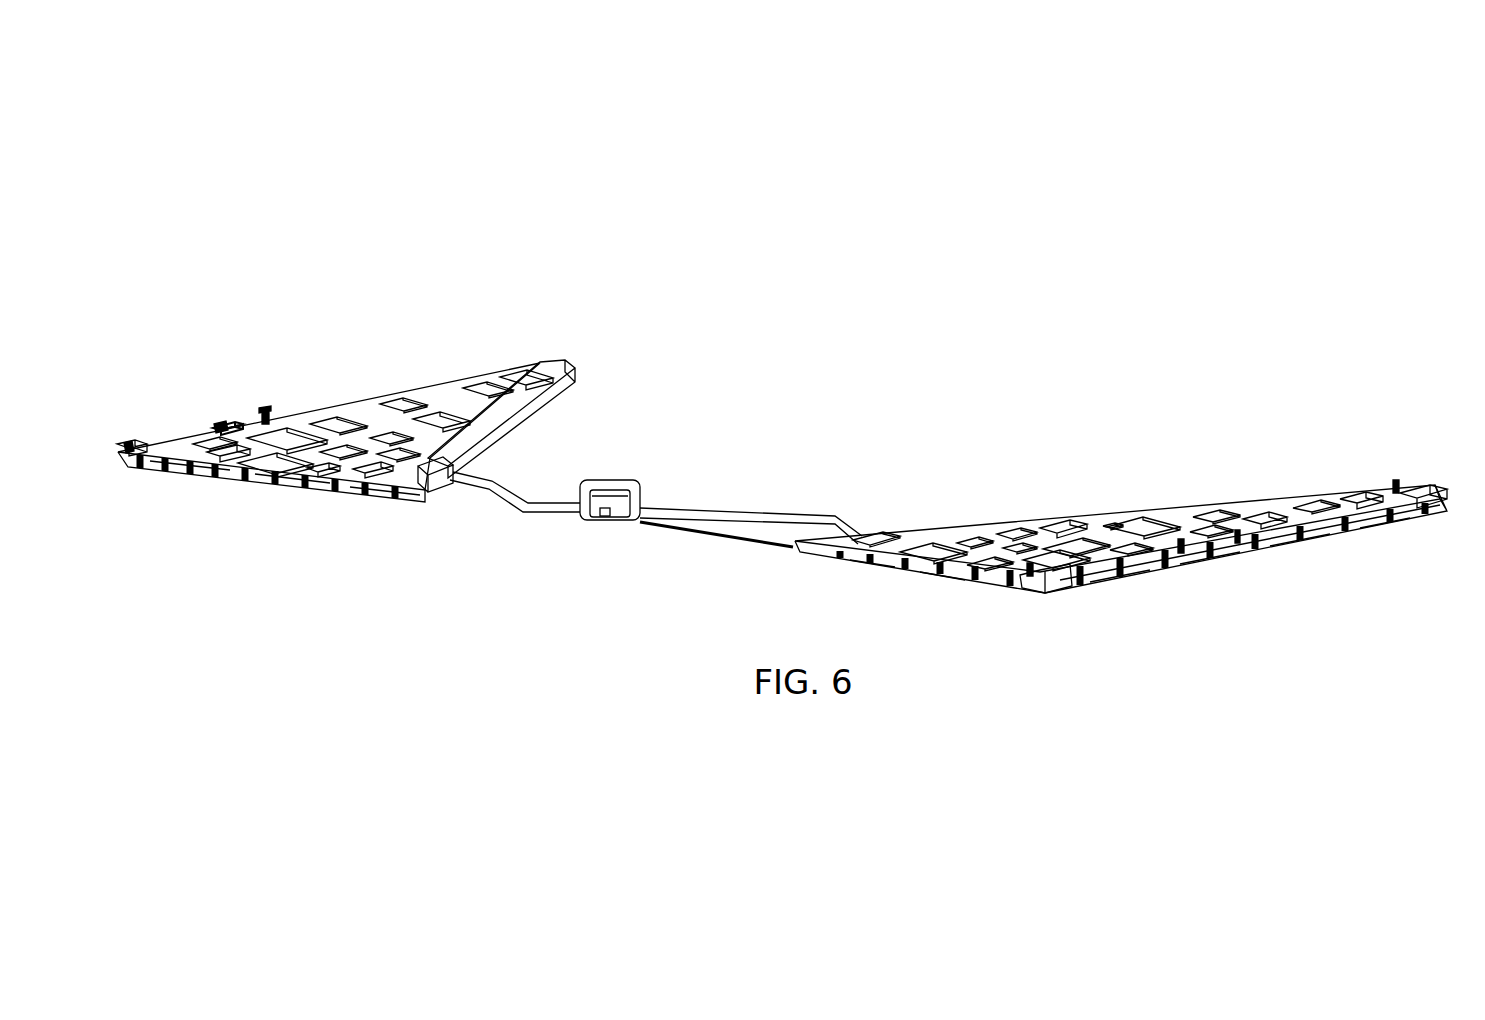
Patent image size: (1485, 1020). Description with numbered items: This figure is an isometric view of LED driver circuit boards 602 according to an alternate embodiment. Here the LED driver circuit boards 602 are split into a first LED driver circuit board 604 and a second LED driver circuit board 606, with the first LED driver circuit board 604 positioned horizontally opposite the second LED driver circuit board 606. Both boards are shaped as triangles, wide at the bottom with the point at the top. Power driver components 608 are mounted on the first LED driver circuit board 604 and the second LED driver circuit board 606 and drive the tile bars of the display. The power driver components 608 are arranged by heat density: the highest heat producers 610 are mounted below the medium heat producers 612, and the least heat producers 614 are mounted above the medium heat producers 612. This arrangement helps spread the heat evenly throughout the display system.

The LED driver circuit boards 602 is at (258, 135).
The first LED driver circuit board 604 is at (283, 492).
The second LED driver circuit board 606 is at (907, 577).
The power driver components 608 is at (420, 463).
The highest heat producers 610 is at (158, 430).
The medium heat producers 612 is at (405, 378).
The least heat producers 614 is at (408, 376).